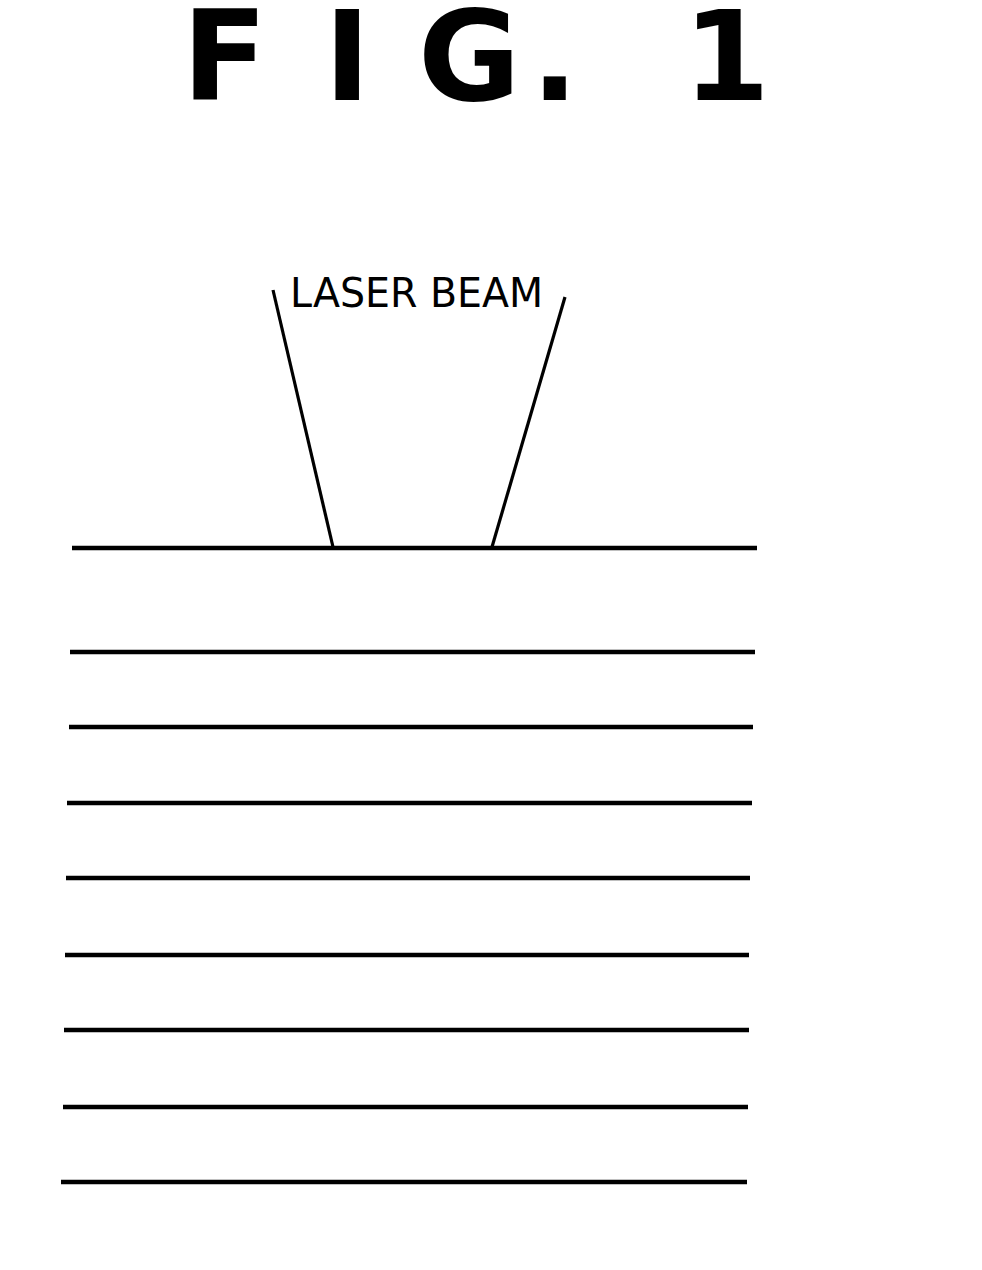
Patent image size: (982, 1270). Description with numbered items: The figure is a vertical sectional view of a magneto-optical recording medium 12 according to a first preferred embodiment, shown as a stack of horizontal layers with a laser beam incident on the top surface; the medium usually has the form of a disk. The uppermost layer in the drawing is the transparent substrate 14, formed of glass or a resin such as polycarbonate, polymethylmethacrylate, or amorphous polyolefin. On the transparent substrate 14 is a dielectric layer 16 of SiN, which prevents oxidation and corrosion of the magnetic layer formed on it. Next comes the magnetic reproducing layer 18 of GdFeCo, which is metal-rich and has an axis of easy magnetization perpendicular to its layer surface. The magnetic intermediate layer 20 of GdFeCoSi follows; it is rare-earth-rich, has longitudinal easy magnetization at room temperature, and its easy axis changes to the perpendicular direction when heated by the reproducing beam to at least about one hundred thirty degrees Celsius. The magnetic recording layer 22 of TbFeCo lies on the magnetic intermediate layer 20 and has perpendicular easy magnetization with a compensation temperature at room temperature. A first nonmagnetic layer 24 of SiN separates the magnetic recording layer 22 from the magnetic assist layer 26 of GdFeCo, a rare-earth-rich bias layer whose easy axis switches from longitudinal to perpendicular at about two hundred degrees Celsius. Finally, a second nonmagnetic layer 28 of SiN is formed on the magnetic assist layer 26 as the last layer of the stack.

The magneto-optical recording medium 12 is at (606, 540).
The transparent substrate 14 is at (730, 605).
The dielectric layer 16 is at (730, 693).
The magnetic reproducing layer 18 is at (729, 773).
The magnetic intermediate layer 20 is at (727, 856).
The magnetic recording layer 22 is at (725, 935).
The first nonmagnetic layer 24 is at (723, 1016).
The magnetic assist layer 26 is at (722, 1096).
The second nonmagnetic layer 28 is at (720, 1175).